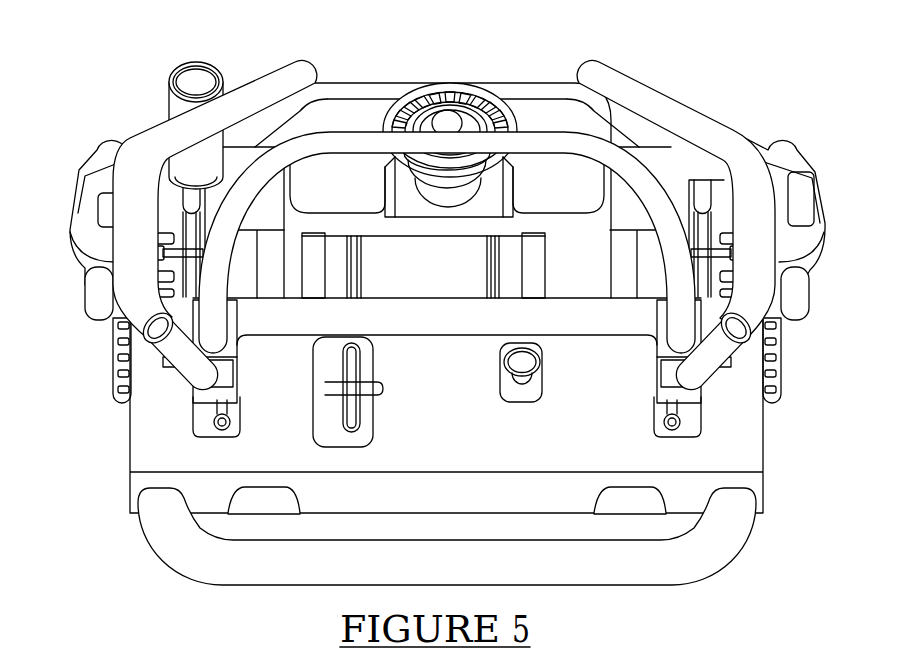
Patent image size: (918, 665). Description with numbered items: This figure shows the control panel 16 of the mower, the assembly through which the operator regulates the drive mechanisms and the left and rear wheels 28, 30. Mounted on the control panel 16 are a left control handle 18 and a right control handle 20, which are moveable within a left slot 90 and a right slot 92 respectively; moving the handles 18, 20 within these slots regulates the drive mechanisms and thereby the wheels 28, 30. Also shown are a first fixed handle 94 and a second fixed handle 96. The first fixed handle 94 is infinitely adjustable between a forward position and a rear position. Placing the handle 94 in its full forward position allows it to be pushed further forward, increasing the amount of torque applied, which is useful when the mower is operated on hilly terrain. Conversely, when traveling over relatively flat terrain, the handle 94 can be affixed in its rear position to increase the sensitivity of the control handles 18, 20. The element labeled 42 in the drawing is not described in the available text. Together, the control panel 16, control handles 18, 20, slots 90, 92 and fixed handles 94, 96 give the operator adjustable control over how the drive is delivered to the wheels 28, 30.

The control panel 16 is at (753, 462).
The left control handle 18 is at (270, 82).
The right control handle 20 is at (643, 98).
The left wheel 28 is at (117, 393).
The rear wheel 30 is at (772, 403).
The motor housing 42 is at (345, 113).
The left slot 90 is at (172, 400).
The right slot 92 is at (732, 378).
The first fixed handle 94 is at (530, 146).
The second fixed handle 96 is at (693, 557).